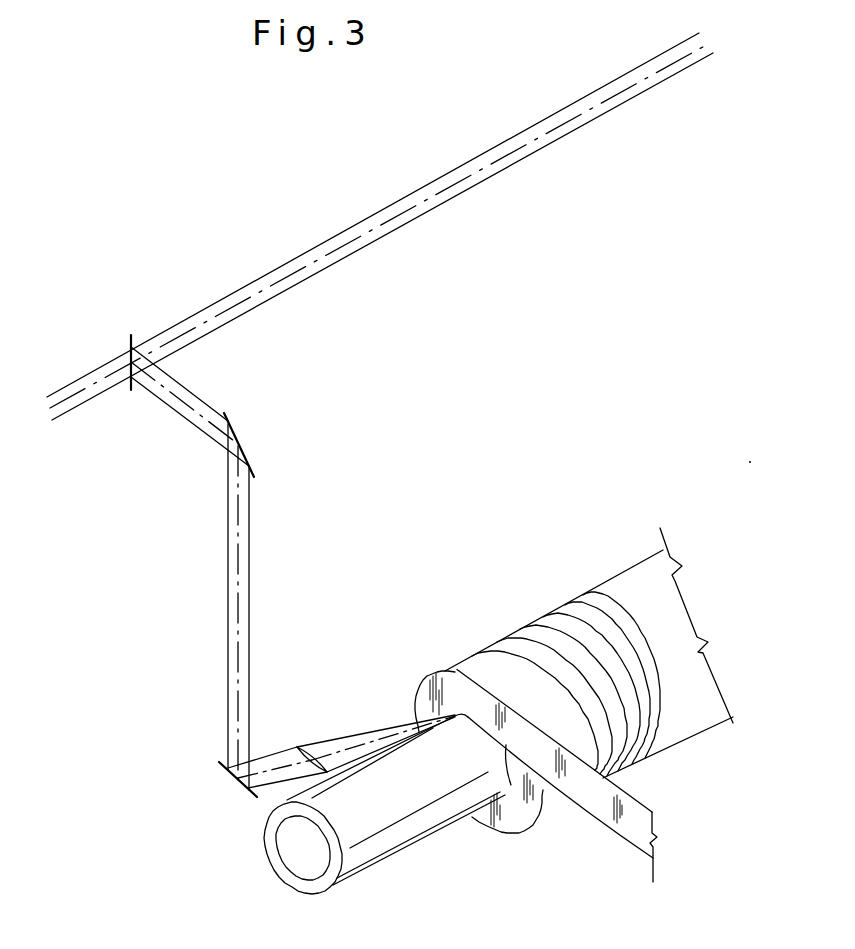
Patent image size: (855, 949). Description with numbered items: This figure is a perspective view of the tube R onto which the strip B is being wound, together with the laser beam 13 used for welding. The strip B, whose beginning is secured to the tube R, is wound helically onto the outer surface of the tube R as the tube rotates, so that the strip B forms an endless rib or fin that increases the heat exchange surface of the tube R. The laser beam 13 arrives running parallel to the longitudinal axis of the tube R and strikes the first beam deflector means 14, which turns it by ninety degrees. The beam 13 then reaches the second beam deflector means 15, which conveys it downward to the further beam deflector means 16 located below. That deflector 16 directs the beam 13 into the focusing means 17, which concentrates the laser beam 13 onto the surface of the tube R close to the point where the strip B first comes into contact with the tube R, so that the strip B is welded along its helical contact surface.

The laser beam 13 is at (458, 177).
The first beam deflector means 14 is at (129, 337).
The second beam deflector means 15 is at (233, 433).
The further beam deflector means 16 is at (232, 775).
The focusing means 17 is at (297, 746).
The tube R is at (387, 838).
The strip B is at (600, 807).